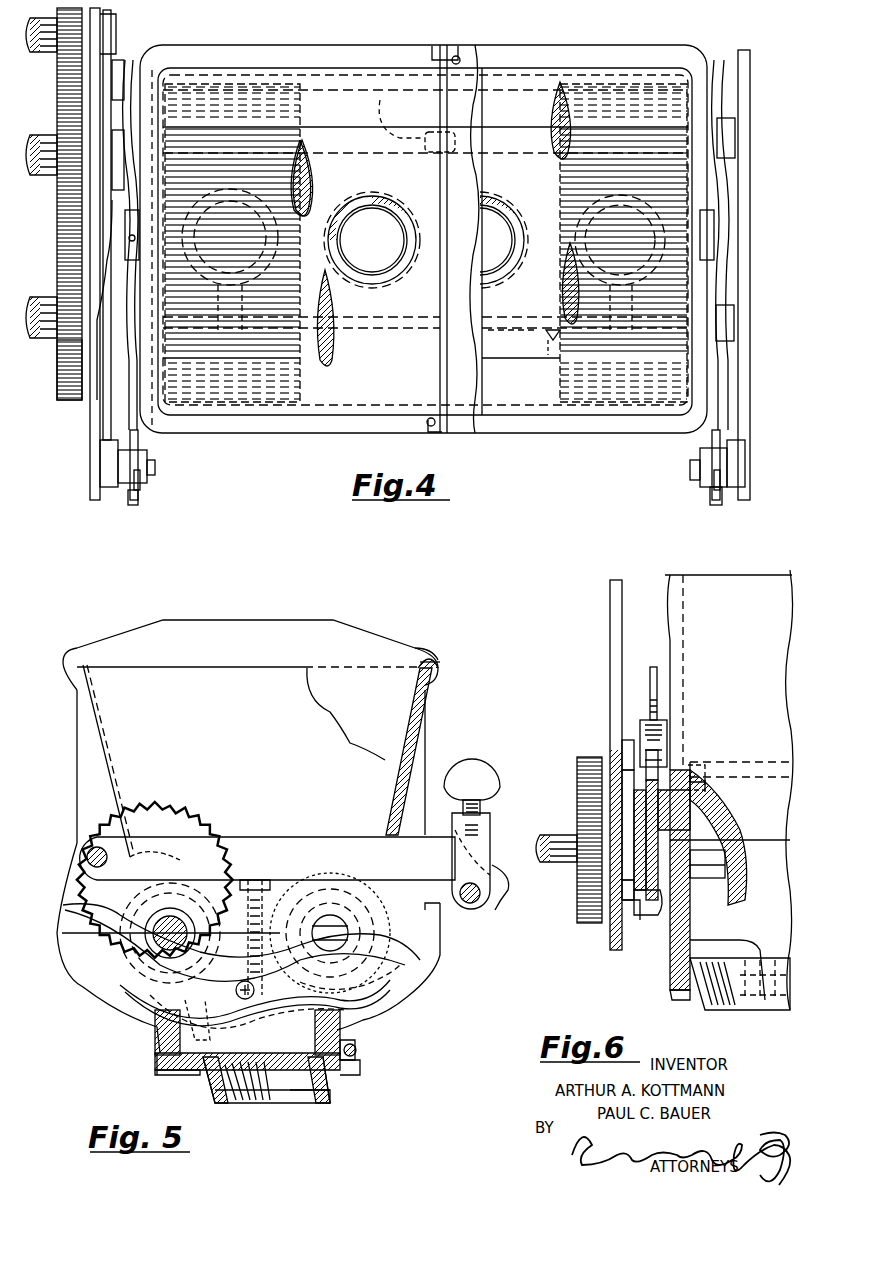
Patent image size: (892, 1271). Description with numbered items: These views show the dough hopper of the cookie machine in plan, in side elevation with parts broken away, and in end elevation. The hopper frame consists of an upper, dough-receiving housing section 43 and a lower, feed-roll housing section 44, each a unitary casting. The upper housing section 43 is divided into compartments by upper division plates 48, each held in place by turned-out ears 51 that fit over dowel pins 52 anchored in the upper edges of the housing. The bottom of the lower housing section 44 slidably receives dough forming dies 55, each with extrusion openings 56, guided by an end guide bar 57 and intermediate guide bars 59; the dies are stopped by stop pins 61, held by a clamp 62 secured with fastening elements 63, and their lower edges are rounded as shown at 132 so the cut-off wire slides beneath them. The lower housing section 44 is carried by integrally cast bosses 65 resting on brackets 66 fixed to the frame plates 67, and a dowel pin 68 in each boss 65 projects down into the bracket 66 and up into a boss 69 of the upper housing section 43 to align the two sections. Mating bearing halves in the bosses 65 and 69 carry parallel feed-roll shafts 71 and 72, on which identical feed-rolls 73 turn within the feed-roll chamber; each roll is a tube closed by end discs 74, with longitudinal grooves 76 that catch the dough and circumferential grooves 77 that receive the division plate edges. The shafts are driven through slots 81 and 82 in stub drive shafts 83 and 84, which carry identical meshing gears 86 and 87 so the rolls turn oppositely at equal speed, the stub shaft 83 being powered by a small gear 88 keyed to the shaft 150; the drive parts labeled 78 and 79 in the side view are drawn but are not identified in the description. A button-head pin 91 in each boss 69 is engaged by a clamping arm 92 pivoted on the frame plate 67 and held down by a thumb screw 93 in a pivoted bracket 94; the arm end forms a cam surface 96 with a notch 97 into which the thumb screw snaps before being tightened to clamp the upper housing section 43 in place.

In FIG. 4, the upper housing section 43 is at (576, 58).
In FIG. 5, the upper housing section 43 is at (413, 733).
In FIG. 6, the upper housing section 43 is at (718, 575).
In FIG. 5, the lower housing section 44 is at (370, 1013).
In FIG. 6, the lower housing section 44 is at (690, 938).
In FIG. 4, the upper division plate 48 is at (428, 135).
In FIG. 5, the upper division plate 48 is at (352, 635).
In FIG. 4, the ears 51 is at (466, 55).
In FIG. 5, the ears 51 is at (440, 663).
In FIG. 4, the dowel pins 52 is at (454, 60).
In FIG. 5, the dowel pins 52 is at (428, 650).
In FIG. 5, the dough forming die 55 is at (323, 1100).
In FIG. 6, the dough forming die 55 is at (704, 1007).
In FIG. 4, the extrusion openings 56 is at (392, 216).
In FIG. 5, the extrusion openings 56 is at (272, 1103).
In FIG. 6, the extrusion openings 56 is at (720, 1010).
In FIG. 6, the guide bar 57 is at (688, 997).
In FIG. 5, the intermediate guide bar 59 is at (170, 1075).
In FIG. 4, the stop pin 61 is at (390, 125).
In FIG. 5, the stop pin 61 is at (160, 1058).
In FIG. 4, the clamp 62 is at (540, 342).
In FIG. 5, the clamp 62 is at (348, 1070).
In FIG. 4, the fastening elements 63 is at (540, 340).
In FIG. 5, the fastening elements 63 is at (358, 1050).
In FIG. 5, the boss 65 is at (388, 975).
In FIG. 6, the boss 65 is at (650, 917).
In FIG. 6, the bracket 66 is at (625, 920).
In FIG. 4, the frame plate 67 is at (92, 475).
In FIG. 6, the frame plate 67 is at (612, 638).
In FIG. 5, the dowel pin 68 is at (237, 995).
In FIG. 6, the dowel pin 68 is at (700, 810).
In FIG. 4, the boss 69 is at (123, 222).
In FIG. 5, the boss 69 is at (355, 880).
In FIG. 6, the boss 69 is at (622, 775).
In FIG. 4, the feed-roll shaft 71 is at (312, 172).
In FIG. 4, the feed-roll shaft 72 is at (331, 350).
In FIG. 5, the feed-roll shaft 72 is at (317, 910).
In FIG. 4, the feed-roll 73 is at (290, 140).
In FIG. 5, the feed-roll 73 is at (130, 1010).
In FIG. 6, the feed-roll 73 is at (762, 760).
In FIG. 5, the disc 74 is at (165, 1005).
In FIG. 6, the disc 74 is at (710, 775).
In FIG. 5, the longitudinal grooves 76 is at (305, 860).
In FIG. 5, the circumferential groove 77 is at (275, 1017).
In FIG. 5, the drive shaft 78 is at (172, 928).
In FIG. 6, the drive shaft 78 is at (626, 815).
In FIG. 5, the driven gear 79 is at (312, 937).
In FIG. 4, the slot 81 is at (118, 200).
In FIG. 6, the slot 81 is at (620, 865).
In FIG. 4, the slot 82 is at (102, 385).
In FIG. 4, the stub drive shaft 83 is at (40, 138).
In FIG. 5, the stub drive shaft 83 is at (160, 930).
In FIG. 6, the stub drive shaft 83 is at (567, 862).
In FIG. 4, the stub drive shaft 84 is at (44, 335).
In FIG. 4, the gear 86 is at (62, 90).
In FIG. 5, the gear 86 is at (157, 865).
In FIG. 6, the gear 86 is at (578, 756).
In FIG. 4, the gear 87 is at (57, 390).
In FIG. 4, the small gear 88 is at (80, 43).
In FIG. 4, the pin 91 is at (63, 250).
In FIG. 5, the pin 91 is at (252, 874).
In FIG. 6, the pin 91 is at (705, 790).
In FIG. 4, the clamping arm 92 is at (138, 435).
In FIG. 5, the clamping arm 92 is at (205, 837).
In FIG. 6, the clamping arm 92 is at (660, 752).
In FIG. 4, the thumb screw 93 is at (138, 480).
In FIG. 5, the thumb screw 93 is at (473, 774).
In FIG. 6, the thumb screw 93 is at (646, 667).
In FIG. 4, the bracket 94 is at (117, 480).
In FIG. 5, the bracket 94 is at (490, 823).
In FIG. 6, the bracket 94 is at (640, 725).
In FIG. 4, the cam surface 96 is at (138, 498).
In FIG. 5, the cam surface 96 is at (495, 898).
In FIG. 5, the notch 97 is at (492, 860).
In FIG. 5, the rounded lower edges 132 is at (210, 1100).
In FIG. 4, the shaft 150 is at (116, 30).